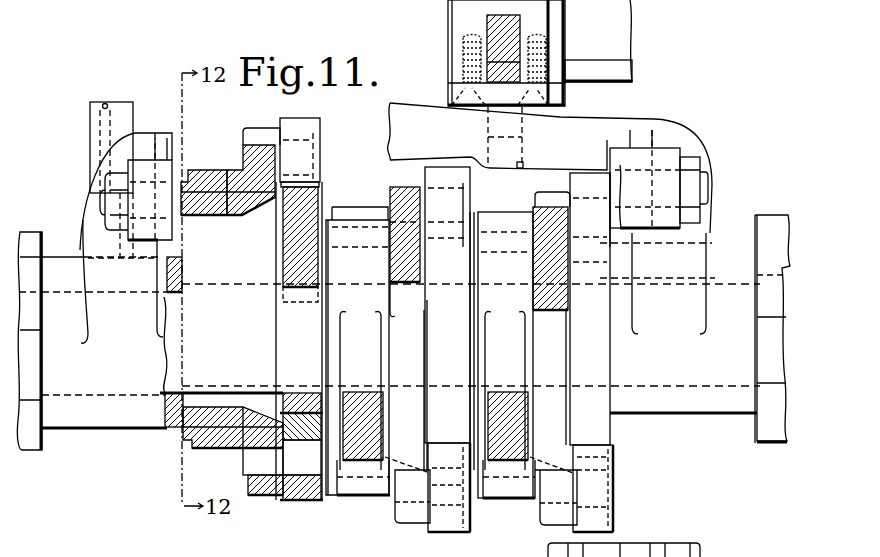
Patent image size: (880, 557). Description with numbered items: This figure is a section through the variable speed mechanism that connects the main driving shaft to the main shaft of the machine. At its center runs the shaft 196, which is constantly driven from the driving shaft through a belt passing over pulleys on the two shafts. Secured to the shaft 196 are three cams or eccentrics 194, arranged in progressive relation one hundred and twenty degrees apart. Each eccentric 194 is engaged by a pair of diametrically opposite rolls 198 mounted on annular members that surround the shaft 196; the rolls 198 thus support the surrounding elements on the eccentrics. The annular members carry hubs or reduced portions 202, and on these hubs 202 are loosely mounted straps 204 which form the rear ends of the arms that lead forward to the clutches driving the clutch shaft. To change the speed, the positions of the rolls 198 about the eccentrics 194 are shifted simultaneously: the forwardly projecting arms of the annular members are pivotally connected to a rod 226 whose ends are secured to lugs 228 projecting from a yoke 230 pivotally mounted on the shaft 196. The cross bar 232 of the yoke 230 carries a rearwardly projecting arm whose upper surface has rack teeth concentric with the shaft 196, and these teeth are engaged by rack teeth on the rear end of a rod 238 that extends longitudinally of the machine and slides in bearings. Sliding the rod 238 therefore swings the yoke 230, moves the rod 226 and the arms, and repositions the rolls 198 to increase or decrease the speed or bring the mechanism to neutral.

The cams or eccentrics 194 is at (313, 208).
The shaft 196 is at (216, 339).
The rolls 198 is at (307, 123).
The hubs or reduced portions 202 is at (228, 170).
The straps 204 is at (197, 170).
The rod 226 is at (143, 203).
The lugs 228 is at (147, 167).
The yoke 230 is at (690, 257).
The cross bar 232 is at (408, 115).
The rod 238 is at (502, 30).